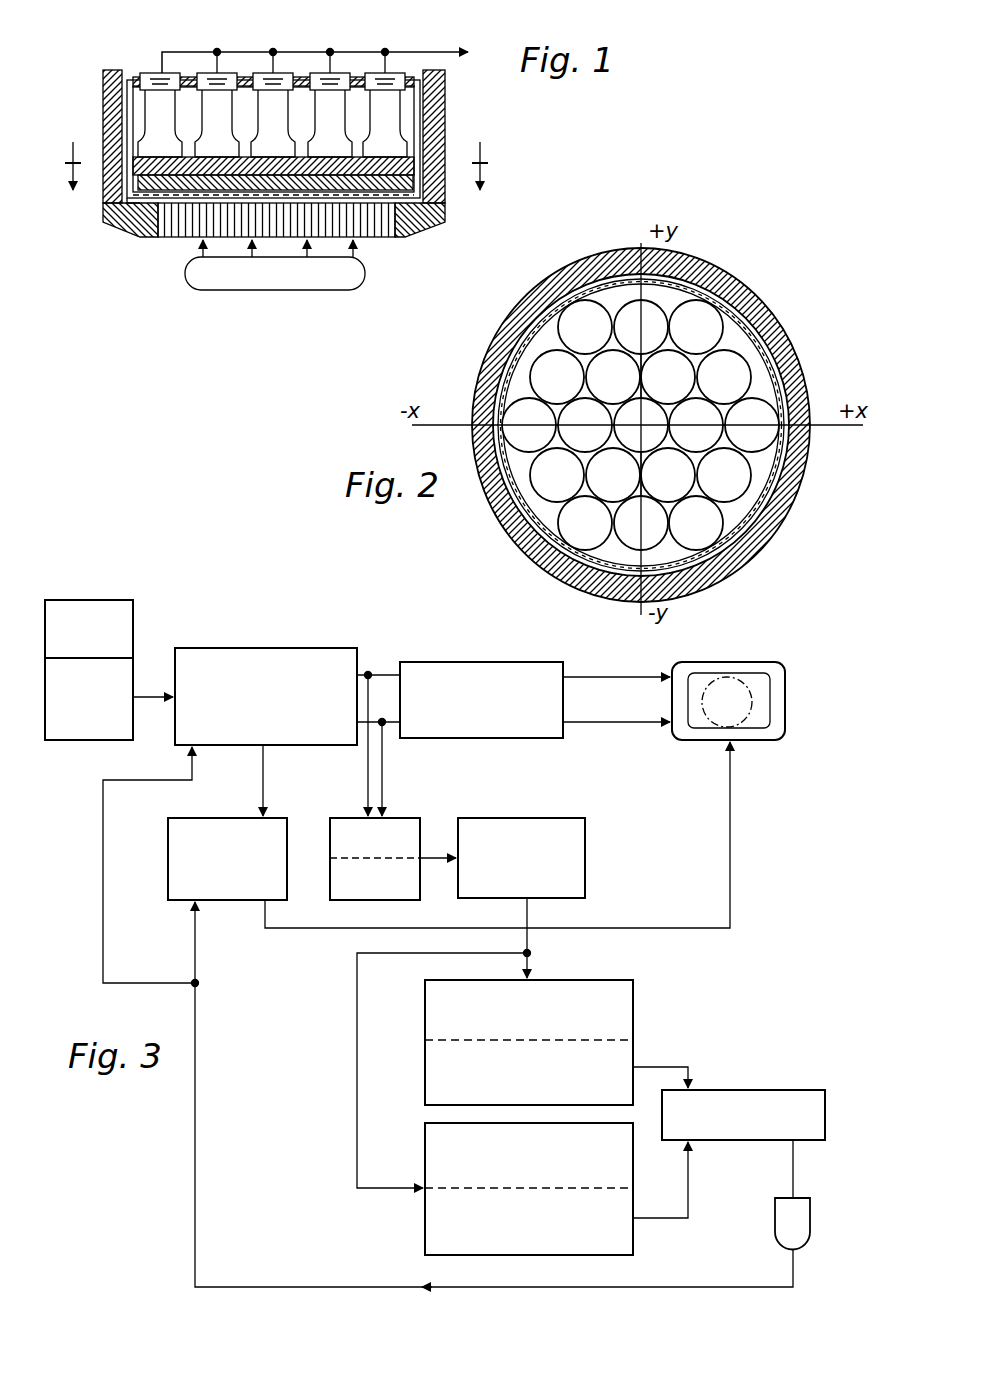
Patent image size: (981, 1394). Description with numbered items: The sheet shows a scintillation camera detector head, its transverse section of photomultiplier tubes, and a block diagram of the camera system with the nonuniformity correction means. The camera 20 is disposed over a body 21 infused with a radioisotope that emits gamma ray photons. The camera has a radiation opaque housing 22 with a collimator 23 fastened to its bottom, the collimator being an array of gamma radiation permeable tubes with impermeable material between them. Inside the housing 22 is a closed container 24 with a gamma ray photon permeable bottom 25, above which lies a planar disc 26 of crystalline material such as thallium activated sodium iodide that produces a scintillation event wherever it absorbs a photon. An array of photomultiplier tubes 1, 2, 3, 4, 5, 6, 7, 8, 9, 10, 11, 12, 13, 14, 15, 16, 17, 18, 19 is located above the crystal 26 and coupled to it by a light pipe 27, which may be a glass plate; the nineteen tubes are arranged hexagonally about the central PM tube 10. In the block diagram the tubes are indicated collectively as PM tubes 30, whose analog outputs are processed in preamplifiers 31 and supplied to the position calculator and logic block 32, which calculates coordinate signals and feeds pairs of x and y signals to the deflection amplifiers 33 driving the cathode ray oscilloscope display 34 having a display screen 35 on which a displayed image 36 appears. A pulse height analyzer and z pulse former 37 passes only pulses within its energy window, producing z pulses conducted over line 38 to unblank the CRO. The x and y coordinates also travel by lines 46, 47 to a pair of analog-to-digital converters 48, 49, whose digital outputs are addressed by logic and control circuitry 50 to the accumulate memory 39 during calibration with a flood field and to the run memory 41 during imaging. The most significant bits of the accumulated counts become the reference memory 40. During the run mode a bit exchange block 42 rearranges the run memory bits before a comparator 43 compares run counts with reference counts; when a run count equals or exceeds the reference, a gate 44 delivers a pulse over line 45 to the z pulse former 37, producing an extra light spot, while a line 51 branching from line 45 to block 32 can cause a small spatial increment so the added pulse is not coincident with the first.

In FIG. 2, the photomultiplier tube 1 is at (585, 327).
In FIG. 1, the photomultiplier tube 2 is at (276, 154).
In FIG. 2, the photomultiplier tube 2 is at (641, 327).
In FIG. 2, the photomultiplier tube 3 is at (696, 327).
In FIG. 2, the photomultiplier tube 4 is at (557, 377).
In FIG. 2, the photomultiplier tube 5 is at (613, 377).
In FIG. 2, the photomultiplier tube 6 is at (668, 377).
In FIG. 2, the photomultiplier tube 7 is at (724, 377).
In FIG. 1, the photomultiplier tube 8 is at (160, 123).
In FIG. 2, the photomultiplier tube 8 is at (529, 425).
In FIG. 1, the photomultiplier tube 9 is at (217, 123).
In FIG. 2, the photomultiplier tube 9 is at (585, 425).
In FIG. 1, the central photomultiplier tube 10 is at (273, 123).
In FIG. 2, the central photomultiplier tube 10 is at (641, 425).
In FIG. 1, the photomultiplier tube 11 is at (330, 123).
In FIG. 2, the photomultiplier tube 11 is at (696, 425).
In FIG. 1, the photomultiplier tube 12 is at (385, 123).
In FIG. 2, the photomultiplier tube 12 is at (752, 425).
In FIG. 2, the photomultiplier tube 13 is at (557, 475).
In FIG. 2, the photomultiplier tube 14 is at (613, 475).
In FIG. 2, the photomultiplier tube 15 is at (668, 475).
In FIG. 2, the photomultiplier tube 16 is at (724, 475).
In FIG. 2, the photomultiplier tube 17 is at (585, 523).
In FIG. 2, the photomultiplier tube 18 is at (641, 523).
In FIG. 2, the photomultiplier tube 19 is at (696, 523).
In FIG. 1, the scintillation camera 20 is at (150, 38).
In FIG. 1, the body 21 is at (186, 272).
In FIG. 1, the radiation opaque housing 22 is at (435, 72).
In FIG. 2, the radiation opaque housing 22 is at (765, 322).
In FIG. 1, the collimator 23 is at (372, 239).
In FIG. 1, the closed container 24 is at (416, 74).
In FIG. 2, the closed container 24 is at (705, 274).
In FIG. 1, the gamma ray photon permeable bottom 25 is at (150, 207).
In FIG. 1, the planar disc 26 is at (125, 206).
In FIG. 1, the light pipe 27 is at (420, 196).
In FIG. 2, the light pipe 27 is at (543, 337).
In FIG. 3, the PM tubes 30 is at (90, 600).
In FIG. 3, the preamplifiers 31 is at (99, 734).
In FIG. 3, the position calculator and logic block 32 is at (264, 648).
In FIG. 3, the deflection amplifiers 33 is at (478, 662).
In FIG. 3, the cathode ray oscilloscope display 34 is at (800, 705).
In FIG. 3, the display screen 35 is at (763, 712).
In FIG. 3, the displayed image 36 is at (712, 720).
In FIG. 3, the pulse height analyzer and z pulse former 37 is at (229, 818).
In FIG. 3, the line 38 is at (729, 845).
In FIG. 3, the accumulate memory 39 is at (622, 980).
In FIG. 3, the reference memory 40 is at (633, 1033).
In FIG. 3, the run memory 41 is at (425, 1160).
In FIG. 3, the bit exchange block 42 is at (425, 1235).
In FIG. 3, the comparator 43 is at (782, 1082).
In FIG. 3, the gate 44 is at (776, 1236).
In FIG. 3, the line 45 is at (197, 1152).
In FIG. 3, the line 46 is at (365, 773).
In FIG. 3, the line 47 is at (395, 775).
In FIG. 3, the analog-to-digital converter 48 is at (371, 895).
In FIG. 3, the analog-to-digital converter 49 is at (408, 818).
In FIG. 3, the logic and control circuitry 50 is at (512, 818).
In FIG. 3, the line 51 is at (103, 952).